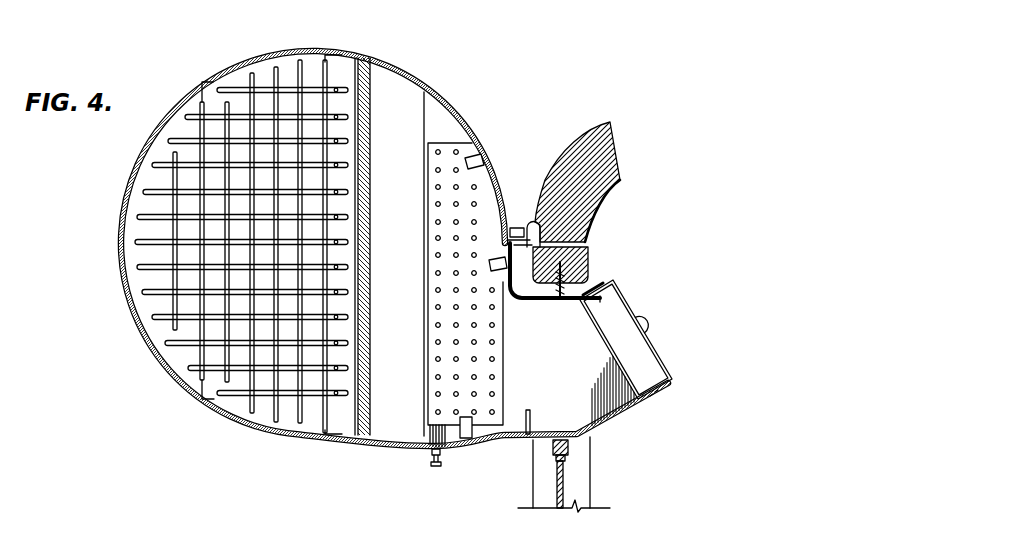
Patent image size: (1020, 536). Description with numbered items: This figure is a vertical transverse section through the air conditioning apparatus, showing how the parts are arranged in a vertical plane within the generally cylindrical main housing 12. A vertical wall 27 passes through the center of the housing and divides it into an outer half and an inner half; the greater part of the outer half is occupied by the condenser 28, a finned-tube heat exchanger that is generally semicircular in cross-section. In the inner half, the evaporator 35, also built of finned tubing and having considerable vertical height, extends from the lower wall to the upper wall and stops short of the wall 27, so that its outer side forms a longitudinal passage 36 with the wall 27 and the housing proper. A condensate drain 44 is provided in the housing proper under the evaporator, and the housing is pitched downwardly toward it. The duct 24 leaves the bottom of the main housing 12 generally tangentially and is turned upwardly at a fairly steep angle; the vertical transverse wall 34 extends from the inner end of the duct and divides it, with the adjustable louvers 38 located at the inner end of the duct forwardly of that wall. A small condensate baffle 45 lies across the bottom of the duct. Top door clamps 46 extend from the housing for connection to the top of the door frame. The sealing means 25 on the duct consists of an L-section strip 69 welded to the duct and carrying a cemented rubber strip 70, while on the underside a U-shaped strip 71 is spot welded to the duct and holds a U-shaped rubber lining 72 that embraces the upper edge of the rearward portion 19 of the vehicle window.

The main housing 12 is at (127, 181).
The condenser 28 is at (137, 266).
The vertical wall 27 is at (358, 203).
The longitudinal passage 36 is at (404, 277).
The evaporator 35 is at (495, 360).
The top door clamp 46 is at (517, 224).
The louvers 38 is at (642, 357).
The rubber strip 70 is at (552, 289).
The sealing means 25 is at (552, 293).
The L-section strip 69 is at (568, 299).
The vertical transverse wall 34 is at (583, 376).
The condensate baffle 45 is at (532, 416).
The duct 24 is at (610, 404).
The condensate drain 44 is at (441, 461).
The U-shaped strip 71 is at (569, 446).
The U-shaped rubber lining 72 is at (567, 459).
The rearward portion of the window 19 is at (564, 493).